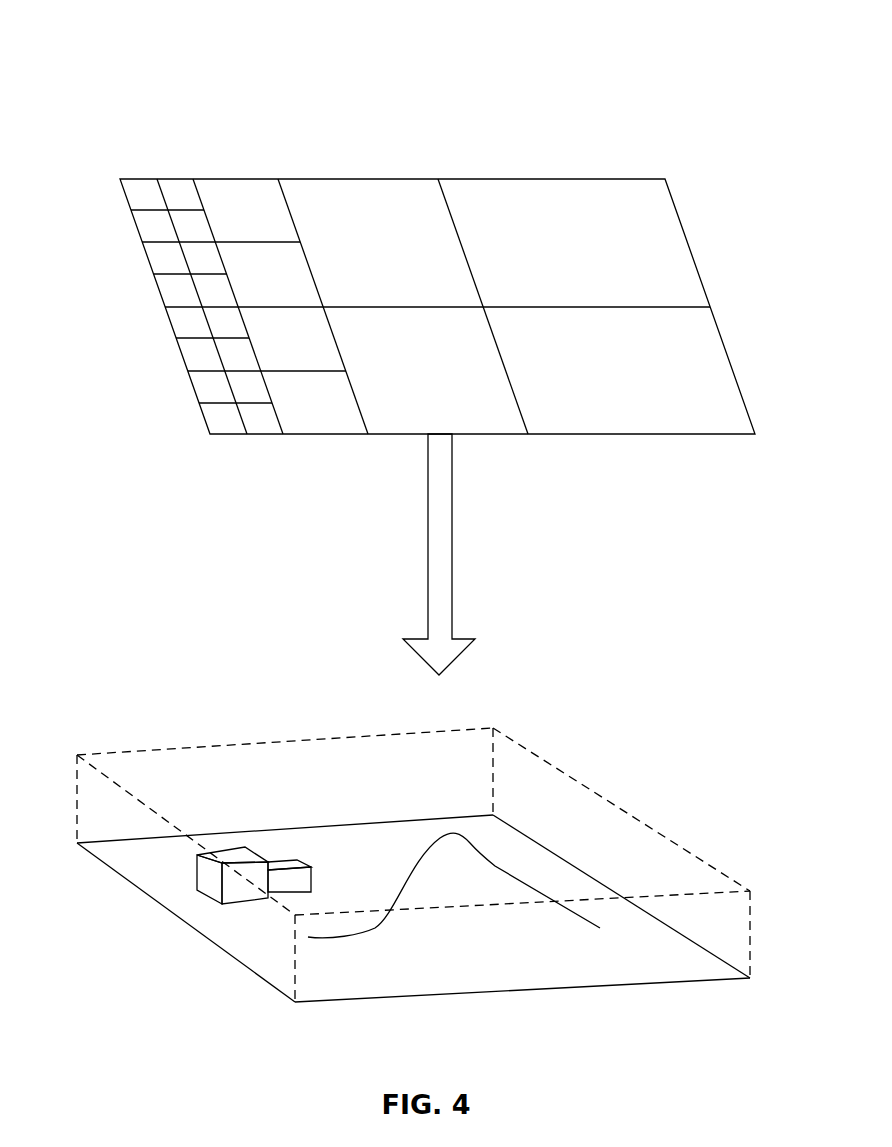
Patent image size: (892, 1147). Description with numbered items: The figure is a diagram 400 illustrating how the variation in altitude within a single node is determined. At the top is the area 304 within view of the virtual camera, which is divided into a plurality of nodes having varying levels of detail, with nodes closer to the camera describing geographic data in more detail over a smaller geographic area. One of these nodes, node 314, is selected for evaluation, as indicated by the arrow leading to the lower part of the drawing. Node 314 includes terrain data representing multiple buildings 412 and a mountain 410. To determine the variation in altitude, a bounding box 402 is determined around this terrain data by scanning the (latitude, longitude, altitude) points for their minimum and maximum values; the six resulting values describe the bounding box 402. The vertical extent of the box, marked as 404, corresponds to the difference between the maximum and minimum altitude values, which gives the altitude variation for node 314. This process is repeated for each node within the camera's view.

The diagram 400 is at (794, 53).
The area 304 is at (189, 435).
The node 314 is at (288, 1024).
The bounding box 402 is at (750, 890).
The height 404 is at (755, 893).
The mountain 410 is at (520, 882).
The buildings 412 is at (223, 853).